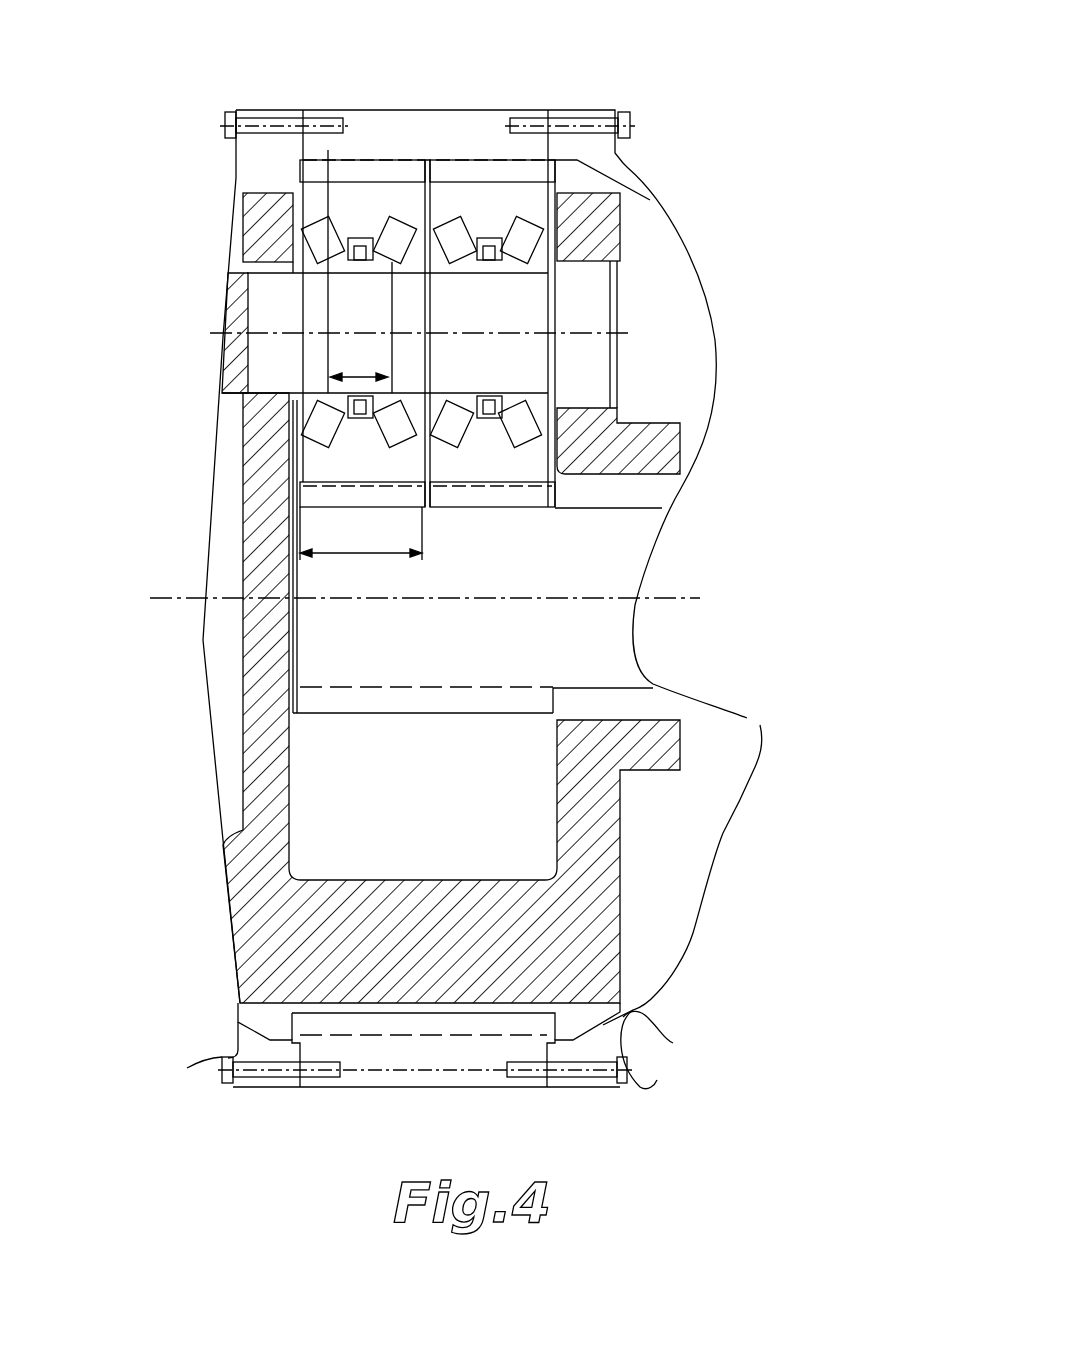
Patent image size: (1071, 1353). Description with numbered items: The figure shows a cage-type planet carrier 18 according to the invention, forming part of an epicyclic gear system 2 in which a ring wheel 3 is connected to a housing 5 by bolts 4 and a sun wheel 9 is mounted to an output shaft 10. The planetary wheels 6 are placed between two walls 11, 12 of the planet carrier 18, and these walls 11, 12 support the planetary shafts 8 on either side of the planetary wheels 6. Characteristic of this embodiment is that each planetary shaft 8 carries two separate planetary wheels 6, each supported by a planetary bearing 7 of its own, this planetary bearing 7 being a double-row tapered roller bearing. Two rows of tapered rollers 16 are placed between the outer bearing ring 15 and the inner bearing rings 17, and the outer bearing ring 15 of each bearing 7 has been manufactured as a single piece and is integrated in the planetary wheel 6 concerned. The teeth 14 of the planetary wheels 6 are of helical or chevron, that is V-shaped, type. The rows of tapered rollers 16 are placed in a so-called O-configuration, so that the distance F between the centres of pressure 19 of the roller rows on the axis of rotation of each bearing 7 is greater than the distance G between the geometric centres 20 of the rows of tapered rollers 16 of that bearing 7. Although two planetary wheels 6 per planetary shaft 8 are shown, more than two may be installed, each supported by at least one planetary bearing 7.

The epicyclic gear system 2 is at (792, 113).
The ring wheel 3 is at (423, 1057).
The bolts 4 is at (627, 1083).
The housing 5 is at (673, 1043).
The planetary wheels 6 is at (363, 167).
The planetary bearing 7 is at (367, 383).
The planetary shafts 8 is at (500, 284).
The sun wheel 9 is at (748, 718).
The output shaft 10 is at (613, 615).
The wall 11 is at (272, 439).
The wall 12 is at (573, 438).
The teeth 14 is at (327, 493).
The outer bearing ring 15 is at (393, 200).
The tapered rollers 16 is at (352, 495).
The inner bearing rings 17 is at (350, 275).
The cage-type planet carrier 18 is at (263, 722).
The centres of pressure 19 is at (367, 495).
The geometric centres 20 is at (400, 335).